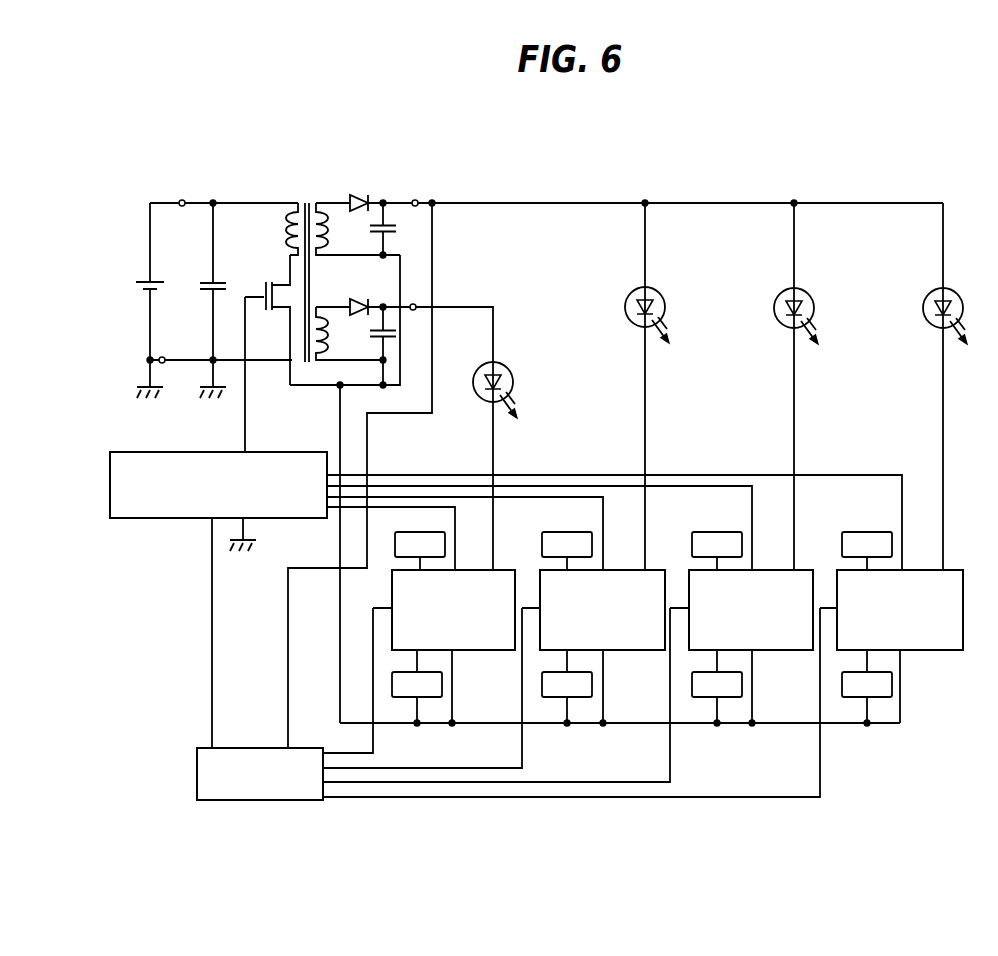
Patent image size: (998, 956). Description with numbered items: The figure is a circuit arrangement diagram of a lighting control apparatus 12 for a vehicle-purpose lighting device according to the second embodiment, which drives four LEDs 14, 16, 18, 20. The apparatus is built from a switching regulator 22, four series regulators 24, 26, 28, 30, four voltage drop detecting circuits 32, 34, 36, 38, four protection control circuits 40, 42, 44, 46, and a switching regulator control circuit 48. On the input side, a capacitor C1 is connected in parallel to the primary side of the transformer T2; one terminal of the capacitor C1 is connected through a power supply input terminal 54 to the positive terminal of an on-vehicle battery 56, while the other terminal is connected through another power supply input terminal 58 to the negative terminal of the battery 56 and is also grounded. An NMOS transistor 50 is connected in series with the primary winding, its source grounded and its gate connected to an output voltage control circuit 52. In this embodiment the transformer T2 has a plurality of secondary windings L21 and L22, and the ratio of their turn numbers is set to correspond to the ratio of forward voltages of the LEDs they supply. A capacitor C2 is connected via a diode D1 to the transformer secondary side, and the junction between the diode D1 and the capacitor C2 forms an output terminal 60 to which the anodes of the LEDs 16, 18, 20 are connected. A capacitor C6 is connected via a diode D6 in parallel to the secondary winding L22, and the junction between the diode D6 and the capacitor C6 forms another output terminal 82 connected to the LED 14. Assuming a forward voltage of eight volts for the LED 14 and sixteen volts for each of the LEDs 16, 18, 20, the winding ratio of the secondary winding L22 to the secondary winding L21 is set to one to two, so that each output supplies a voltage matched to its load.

The lighting control apparatus 12 is at (784, 164).
The LED 14 is at (512, 371).
The LED 16 is at (664, 299).
The LED 18 is at (811, 298).
The LED 20 is at (926, 298).
The switching regulator 22 is at (393, 141).
The series regulator 24 is at (481, 651).
The series regulator 26 is at (631, 651).
The series regulator 28 is at (781, 651).
The series regulator 30 is at (923, 651).
The voltage drop detecting circuit 32 is at (418, 531).
The voltage drop detecting circuit 34 is at (565, 531).
The voltage drop detecting circuit 36 is at (715, 531).
The voltage drop detecting circuit 38 is at (863, 531).
The protection control circuit 40 is at (428, 698).
The protection control circuit 42 is at (578, 698).
The protection control circuit 44 is at (728, 698).
The protection control circuit 46 is at (878, 698).
The switching regulator control circuit 48 is at (280, 801).
The NMOS transistor 50 is at (267, 314).
The output voltage control circuit 52 is at (290, 519).
The power supply input terminal 54 is at (182, 201).
The on-vehicle battery 56 is at (160, 289).
The power supply input terminal 58 is at (162, 363).
The output terminal 60 is at (417, 201).
The output terminal 82 is at (417, 306).
The transformer T2 is at (305, 266).
The secondary winding L21 is at (333, 228).
The secondary winding L22 is at (332, 340).
The diode D1 is at (349, 191).
The diode D6 is at (364, 293).
The capacitor C1 is at (223, 280).
The capacitor C2 is at (397, 229).
The capacitor C6 is at (396, 329).